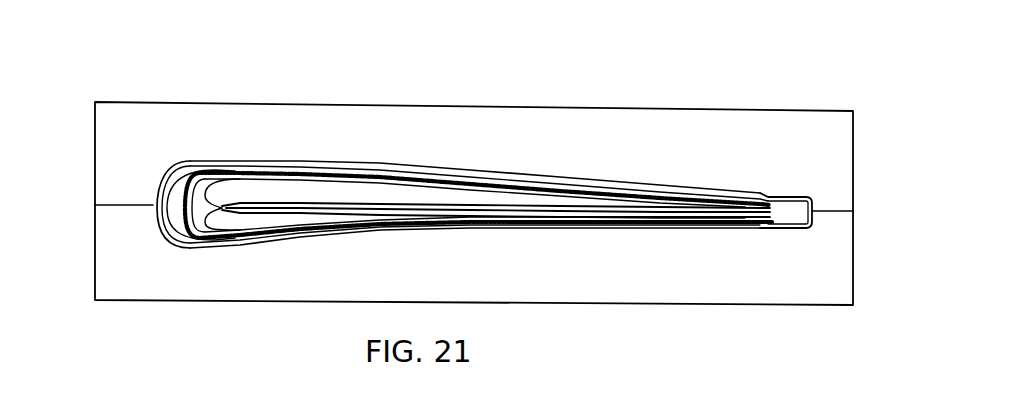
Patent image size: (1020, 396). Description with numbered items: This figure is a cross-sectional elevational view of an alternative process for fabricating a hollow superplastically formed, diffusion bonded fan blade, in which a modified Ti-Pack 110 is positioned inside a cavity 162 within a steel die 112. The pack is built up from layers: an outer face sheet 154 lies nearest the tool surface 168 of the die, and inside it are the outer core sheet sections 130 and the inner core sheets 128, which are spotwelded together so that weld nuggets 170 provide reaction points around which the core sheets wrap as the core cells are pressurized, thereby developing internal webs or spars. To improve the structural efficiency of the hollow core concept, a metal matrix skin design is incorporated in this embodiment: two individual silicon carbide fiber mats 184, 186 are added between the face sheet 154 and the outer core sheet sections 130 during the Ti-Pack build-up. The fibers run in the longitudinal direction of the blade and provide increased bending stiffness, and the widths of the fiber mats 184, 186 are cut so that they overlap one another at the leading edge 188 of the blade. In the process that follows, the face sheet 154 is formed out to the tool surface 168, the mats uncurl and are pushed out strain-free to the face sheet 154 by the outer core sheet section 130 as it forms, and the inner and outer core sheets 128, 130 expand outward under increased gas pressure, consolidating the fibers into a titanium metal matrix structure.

The Ti-Pack 110 is at (803, 178).
The steel die 112 is at (818, 306).
The inner core sheet 128 is at (417, 238).
The outer core sheet section 130 is at (399, 178).
The face sheet 154 is at (343, 175).
The cavity 162 is at (490, 173).
The tool surface 168 is at (561, 174).
The weld nugget 170 is at (240, 245).
The silicon carbide fiber mat 184 is at (253, 176).
The silicon carbide fiber mat 186 is at (234, 224).
The leading edge 188 is at (154, 196).